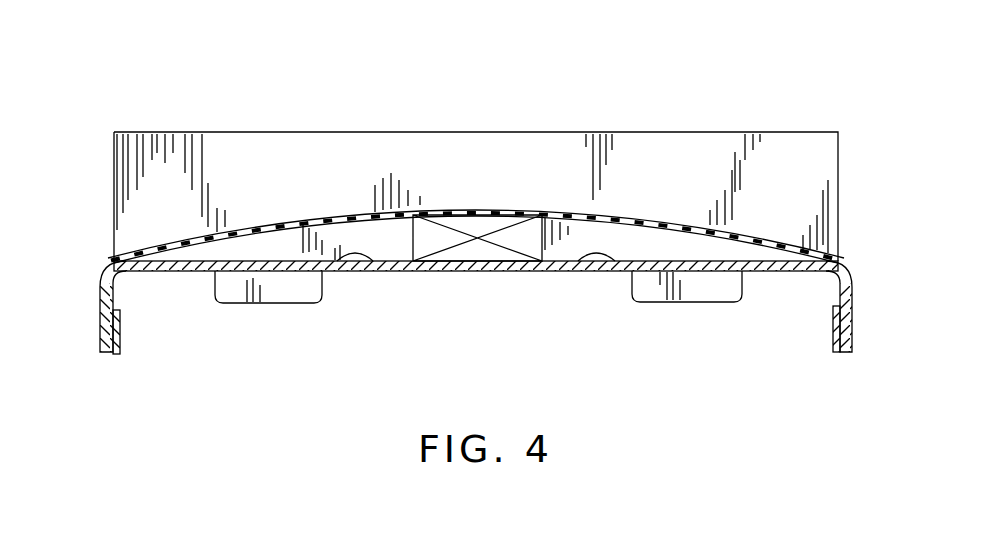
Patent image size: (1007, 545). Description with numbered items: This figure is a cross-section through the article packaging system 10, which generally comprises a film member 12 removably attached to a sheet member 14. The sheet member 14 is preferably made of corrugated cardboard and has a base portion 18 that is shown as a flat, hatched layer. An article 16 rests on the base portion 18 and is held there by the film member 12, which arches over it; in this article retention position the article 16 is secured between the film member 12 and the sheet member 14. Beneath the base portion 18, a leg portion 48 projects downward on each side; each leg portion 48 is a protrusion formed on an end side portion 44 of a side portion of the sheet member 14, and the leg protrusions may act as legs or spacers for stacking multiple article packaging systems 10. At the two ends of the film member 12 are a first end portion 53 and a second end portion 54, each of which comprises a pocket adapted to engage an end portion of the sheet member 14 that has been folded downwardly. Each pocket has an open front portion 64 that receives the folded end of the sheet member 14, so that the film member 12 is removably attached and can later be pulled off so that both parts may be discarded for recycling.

The article packaging system 10 is at (276, 105).
The film member 12 is at (600, 211).
The sheet member 14 is at (502, 271).
The article 16 is at (465, 245).
The base portion 18 is at (375, 262).
The end side portion 44 is at (488, 181).
The leg portion 48 is at (250, 303).
The first end portion 53 is at (861, 338).
The second end portion 54 is at (92, 347).
The open front portion 64 is at (140, 304).